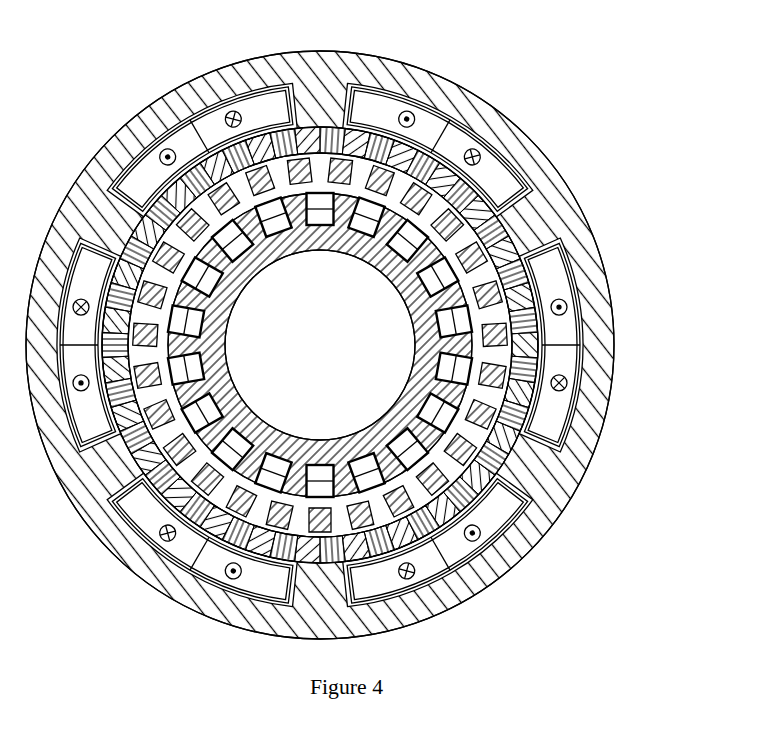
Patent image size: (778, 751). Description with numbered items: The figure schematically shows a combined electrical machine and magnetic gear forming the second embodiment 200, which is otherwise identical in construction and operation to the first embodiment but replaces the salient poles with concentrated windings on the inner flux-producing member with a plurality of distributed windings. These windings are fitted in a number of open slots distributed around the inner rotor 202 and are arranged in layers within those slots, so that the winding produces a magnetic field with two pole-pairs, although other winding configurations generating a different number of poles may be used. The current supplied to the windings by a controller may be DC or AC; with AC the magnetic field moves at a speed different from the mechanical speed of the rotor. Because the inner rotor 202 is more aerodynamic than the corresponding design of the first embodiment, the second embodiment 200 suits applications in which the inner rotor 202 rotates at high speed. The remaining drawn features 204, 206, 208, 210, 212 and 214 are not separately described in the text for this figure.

The second embodiment 200 is at (508, 582).
The inner rotor 202 is at (254, 276).
The rotor bore / shaft opening 204 is at (411, 311).
The stator 206 is at (465, 237).
The stator windings 208 is at (477, 253).
The stator core laminations 210 is at (143, 450).
The housing 212 is at (600, 350).
The cooling channel plates 214 is at (503, 514).